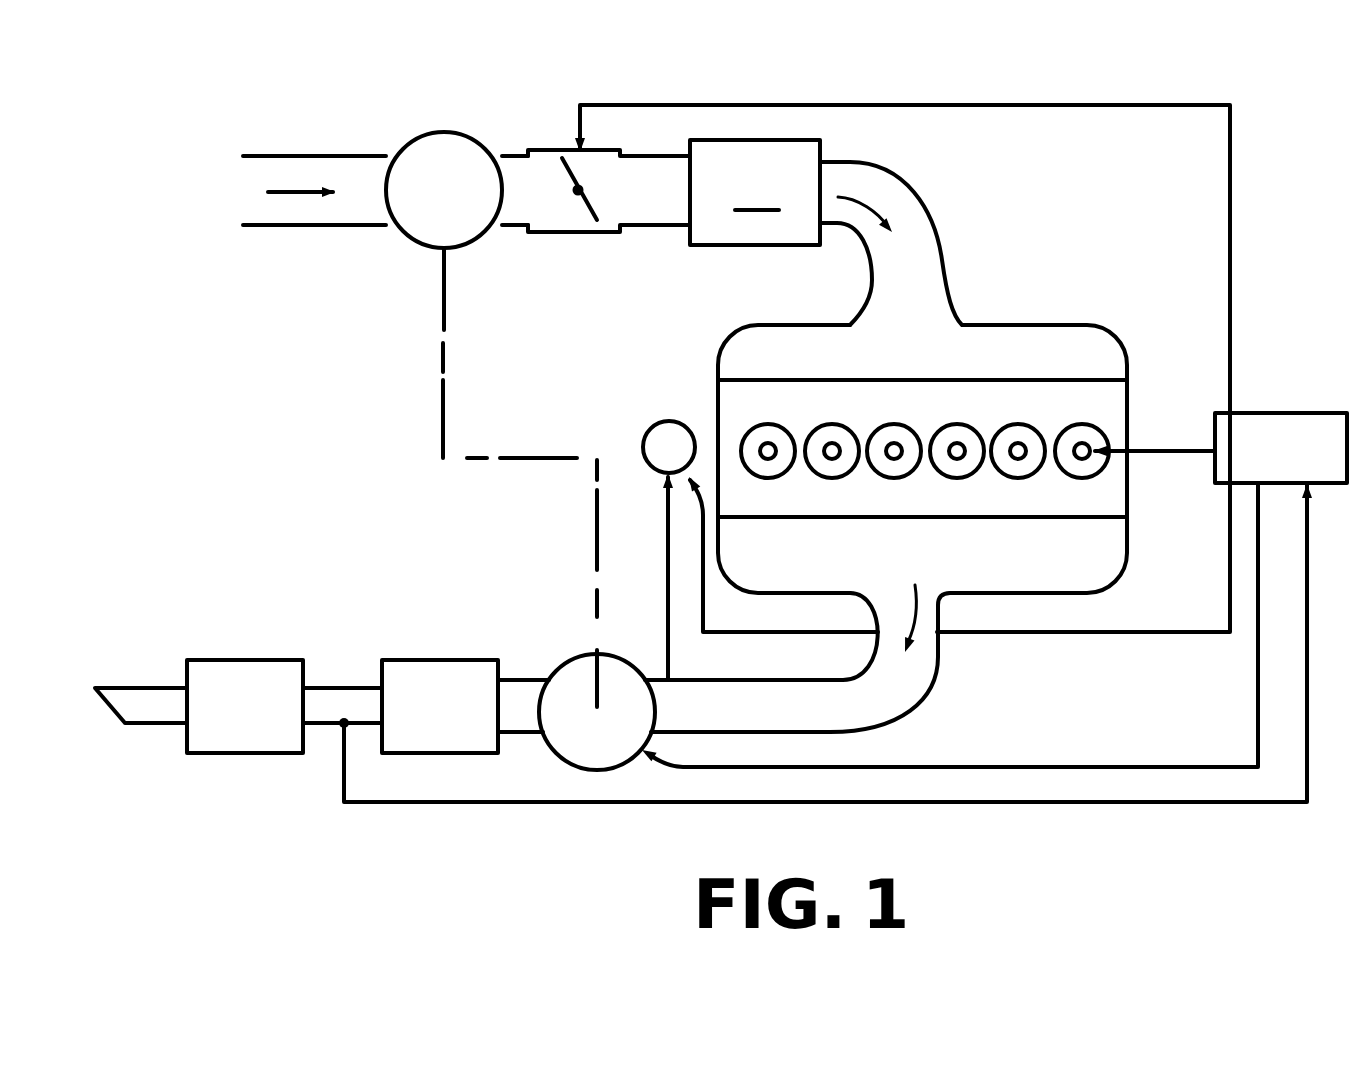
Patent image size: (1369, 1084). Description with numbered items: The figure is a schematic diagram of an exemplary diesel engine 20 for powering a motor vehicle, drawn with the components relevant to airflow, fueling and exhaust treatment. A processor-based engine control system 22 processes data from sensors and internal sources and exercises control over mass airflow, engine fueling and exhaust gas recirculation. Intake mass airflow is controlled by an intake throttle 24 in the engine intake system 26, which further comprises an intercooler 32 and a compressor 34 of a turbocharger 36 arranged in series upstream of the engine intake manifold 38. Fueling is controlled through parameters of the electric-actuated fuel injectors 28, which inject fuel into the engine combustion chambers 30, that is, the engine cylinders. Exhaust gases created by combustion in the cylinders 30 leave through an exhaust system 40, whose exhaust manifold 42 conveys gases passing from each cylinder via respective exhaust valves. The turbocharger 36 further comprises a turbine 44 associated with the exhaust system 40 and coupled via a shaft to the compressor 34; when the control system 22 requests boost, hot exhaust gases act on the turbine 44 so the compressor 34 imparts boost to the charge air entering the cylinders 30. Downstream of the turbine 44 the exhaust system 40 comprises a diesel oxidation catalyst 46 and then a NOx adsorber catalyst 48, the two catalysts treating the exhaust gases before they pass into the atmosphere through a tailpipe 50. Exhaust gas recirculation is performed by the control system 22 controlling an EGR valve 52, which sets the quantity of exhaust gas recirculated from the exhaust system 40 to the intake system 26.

The diesel engine 20 is at (1096, 320).
The engine control system 22 is at (1305, 413).
The intake throttle 24 is at (570, 232).
The engine intake system 26 is at (516, 230).
The fuel injectors 28 is at (895, 442).
The engine combustion chambers 30 is at (898, 478).
The intercooler 32 is at (755, 192).
The compressor 34 is at (413, 243).
The turbocharger 36 is at (595, 492).
The engine intake manifold 38 is at (963, 323).
The exhaust system 40 is at (527, 678).
The exhaust manifold 42 is at (1107, 575).
The turbine 44 is at (583, 652).
The diesel oxidation catalyst 46 is at (437, 660).
The NOx adsorber catalyst 48 is at (262, 660).
The tailpipe 50 is at (155, 688).
The EGR valve 52 is at (650, 430).